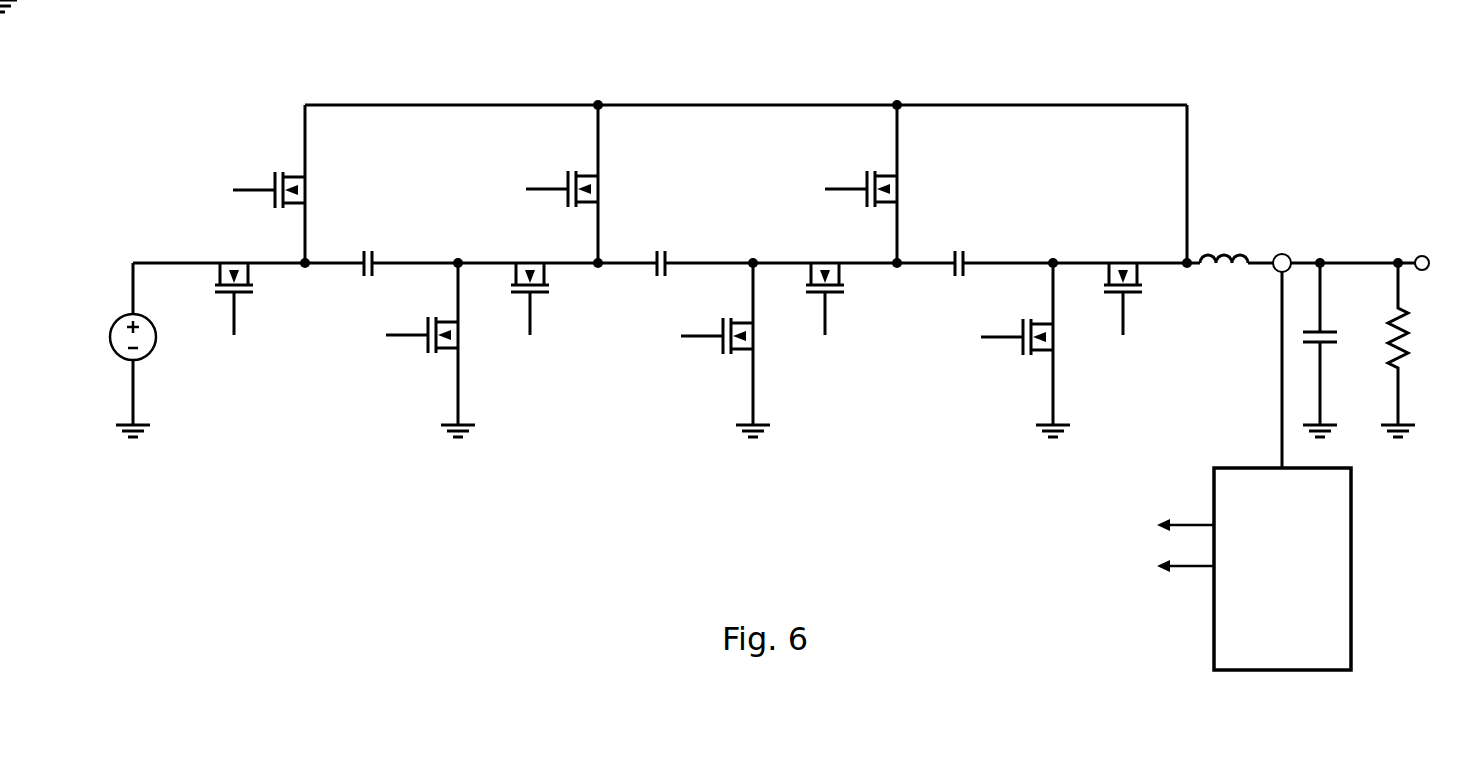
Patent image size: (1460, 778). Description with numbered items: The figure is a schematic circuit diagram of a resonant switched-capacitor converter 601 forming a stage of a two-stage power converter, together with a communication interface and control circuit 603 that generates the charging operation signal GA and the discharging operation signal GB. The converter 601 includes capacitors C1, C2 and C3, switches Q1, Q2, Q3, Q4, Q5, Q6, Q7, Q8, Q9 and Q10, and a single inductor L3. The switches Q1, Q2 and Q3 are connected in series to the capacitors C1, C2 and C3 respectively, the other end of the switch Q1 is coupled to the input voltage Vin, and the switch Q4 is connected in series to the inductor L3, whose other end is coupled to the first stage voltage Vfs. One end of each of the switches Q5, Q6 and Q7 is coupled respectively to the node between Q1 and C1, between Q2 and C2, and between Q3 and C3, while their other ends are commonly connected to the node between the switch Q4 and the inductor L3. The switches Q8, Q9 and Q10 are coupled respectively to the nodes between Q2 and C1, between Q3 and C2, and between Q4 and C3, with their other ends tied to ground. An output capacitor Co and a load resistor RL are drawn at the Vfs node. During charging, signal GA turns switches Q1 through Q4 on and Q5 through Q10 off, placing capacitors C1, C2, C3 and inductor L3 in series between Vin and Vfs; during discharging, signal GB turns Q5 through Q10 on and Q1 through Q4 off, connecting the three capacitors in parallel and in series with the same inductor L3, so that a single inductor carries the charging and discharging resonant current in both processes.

The resonant switched-capacitor converter 601 is at (1324, 72).
The communication interface and control circuit 603 is at (1266, 650).
The switch Q1 is at (226, 313).
The switch Q2 is at (521, 313).
The switch Q3 is at (816, 313).
The switch Q4 is at (1131, 313).
The switch Q5 is at (252, 180).
The switch Q6 is at (545, 180).
The switch Q7 is at (844, 180).
The switch Q8 is at (405, 343).
The switch Q9 is at (700, 344).
The switch Q10 is at (998, 345).
The capacitor C1 is at (369, 249).
The capacitor C2 is at (665, 249).
The capacitor C3 is at (964, 249).
The inductor L3 is at (1245, 218).
The output capacitor Co is at (1331, 350).
The load resistor RL is at (1413, 350).
The input voltage Vin is at (116, 337).
The first stage voltage Vfs is at (1422, 245).